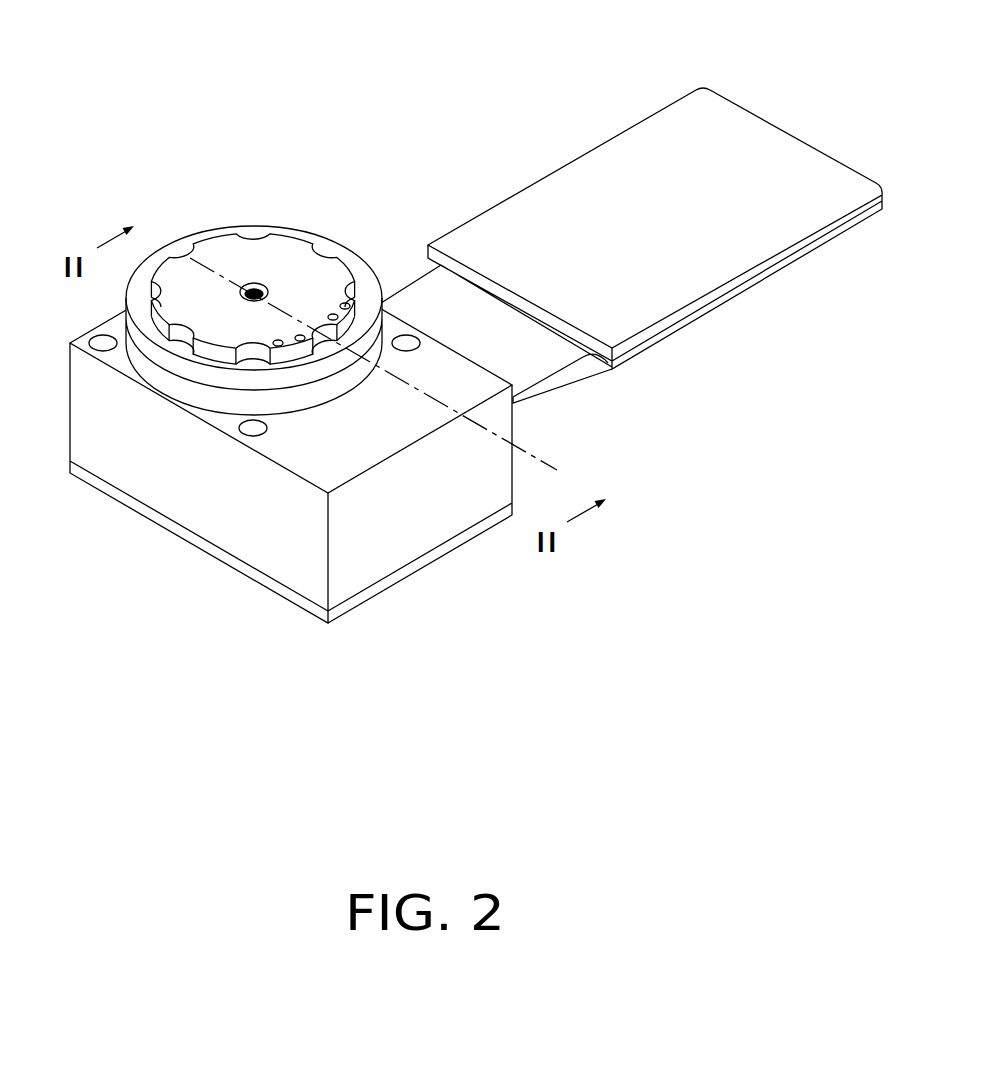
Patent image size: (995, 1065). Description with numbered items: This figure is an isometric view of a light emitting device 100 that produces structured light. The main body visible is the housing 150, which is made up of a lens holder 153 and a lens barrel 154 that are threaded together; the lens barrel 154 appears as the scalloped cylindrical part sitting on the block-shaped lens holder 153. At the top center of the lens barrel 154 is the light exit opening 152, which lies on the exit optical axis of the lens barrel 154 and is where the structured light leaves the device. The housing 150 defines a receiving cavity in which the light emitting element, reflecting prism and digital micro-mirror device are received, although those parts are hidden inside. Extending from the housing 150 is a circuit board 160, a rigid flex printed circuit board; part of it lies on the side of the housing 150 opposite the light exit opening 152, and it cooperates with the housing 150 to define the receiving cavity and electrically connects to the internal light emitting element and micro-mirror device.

The light emitting device 100 is at (471, 64).
The housing 150 is at (126, 599).
The light exit opening 152 is at (258, 281).
The lens holder 153 is at (290, 447).
The lens barrel 154 is at (218, 317).
The circuit board 160 is at (425, 287).